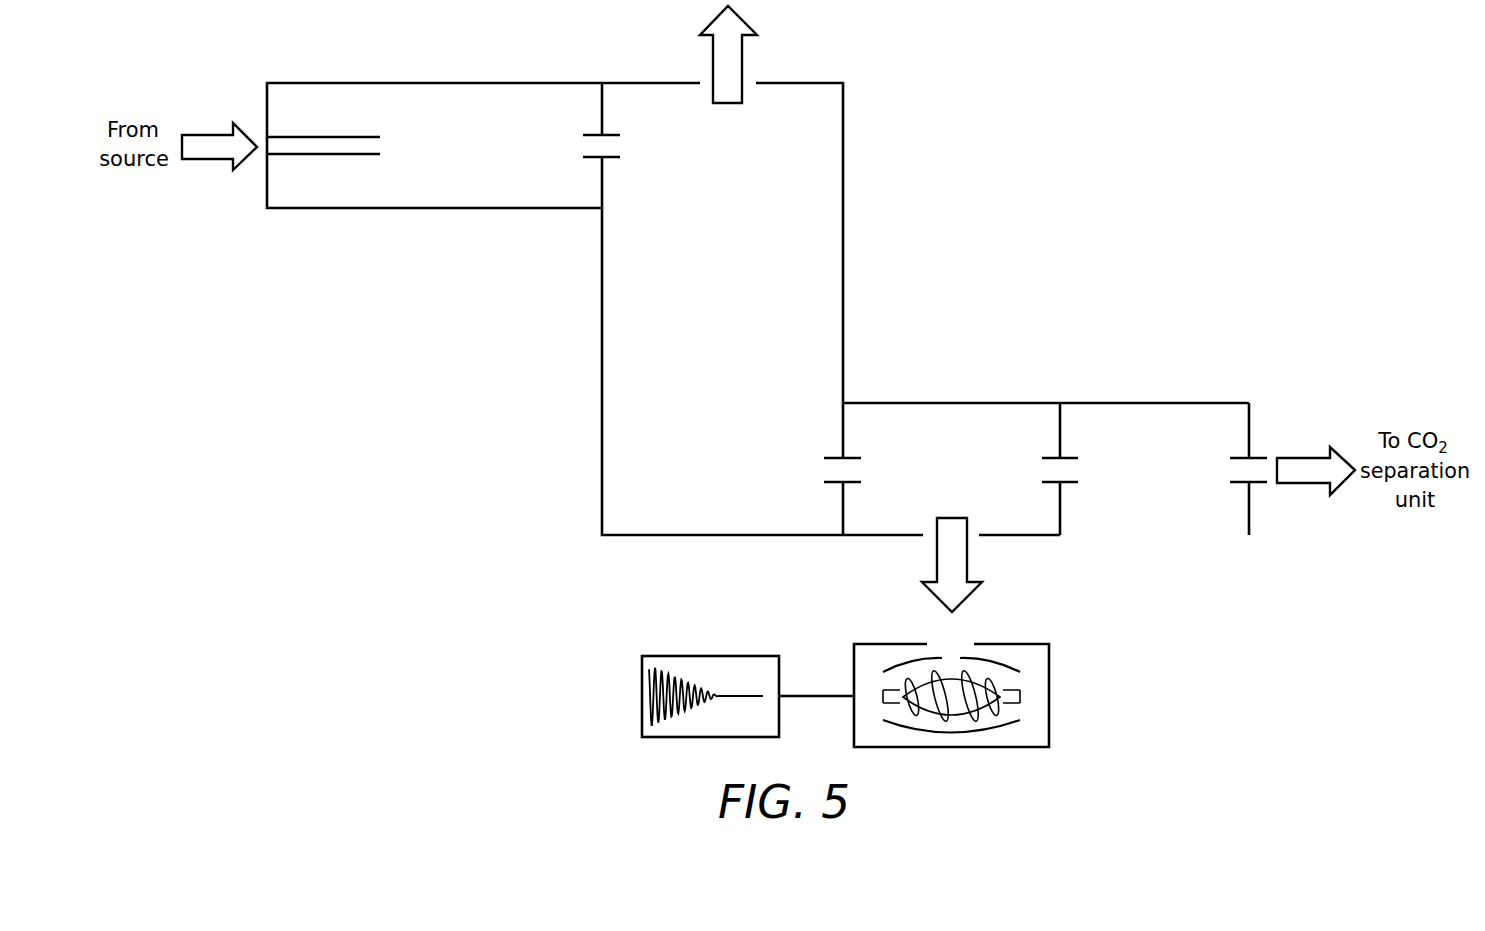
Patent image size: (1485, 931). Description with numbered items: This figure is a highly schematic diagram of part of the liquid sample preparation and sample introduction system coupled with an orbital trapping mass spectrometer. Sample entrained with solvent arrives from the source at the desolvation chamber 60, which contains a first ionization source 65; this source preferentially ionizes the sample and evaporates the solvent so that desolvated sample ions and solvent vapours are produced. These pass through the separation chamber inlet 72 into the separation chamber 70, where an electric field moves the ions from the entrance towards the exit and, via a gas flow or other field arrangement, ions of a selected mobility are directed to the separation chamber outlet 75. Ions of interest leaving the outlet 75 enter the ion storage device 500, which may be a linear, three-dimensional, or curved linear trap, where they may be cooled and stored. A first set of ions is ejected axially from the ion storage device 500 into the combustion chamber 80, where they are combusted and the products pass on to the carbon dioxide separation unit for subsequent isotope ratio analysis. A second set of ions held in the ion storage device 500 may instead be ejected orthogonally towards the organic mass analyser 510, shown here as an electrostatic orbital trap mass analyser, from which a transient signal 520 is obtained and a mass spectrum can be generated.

The desolvation chamber 60 is at (423, 92).
The first ionization source 65 is at (353, 156).
The separation chamber 70 is at (833, 178).
The separation chamber inlet 72 is at (593, 130).
The separation chamber outlet 75 is at (834, 457).
The combustion chamber 80 is at (1157, 412).
The ion storage device 500 is at (950, 412).
The organic mass analyser 510 is at (1050, 658).
The transient signal 520 is at (641, 668).